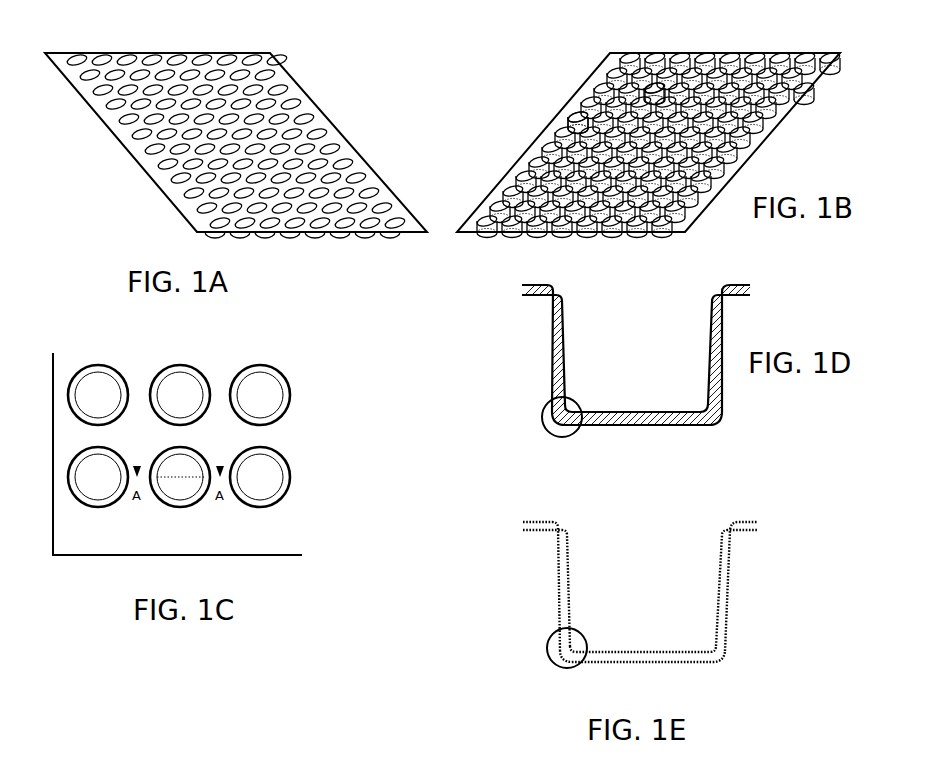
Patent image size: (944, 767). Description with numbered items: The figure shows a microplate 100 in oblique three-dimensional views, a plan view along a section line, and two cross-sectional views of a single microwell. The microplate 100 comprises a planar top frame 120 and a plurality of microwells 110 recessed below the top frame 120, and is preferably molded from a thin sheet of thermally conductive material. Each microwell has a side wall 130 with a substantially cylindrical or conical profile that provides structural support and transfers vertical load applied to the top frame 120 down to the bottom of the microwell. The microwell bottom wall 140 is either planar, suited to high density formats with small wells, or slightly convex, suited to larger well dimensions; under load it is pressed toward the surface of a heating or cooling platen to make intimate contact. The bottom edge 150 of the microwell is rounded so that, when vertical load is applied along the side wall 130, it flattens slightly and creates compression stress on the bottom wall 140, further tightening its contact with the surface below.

In FIG. 1A, the microplate 100 is at (232, 145).
In FIG. 1B, the microplate 100 is at (649, 137).
In FIG. 1A, the microwells 110 is at (99, 93).
In FIG. 1C, the microwells 110 is at (263, 478).
In FIG. 1A, the planar top frame 120 is at (152, 170).
In FIG. 1B, the microwell side wall 130 is at (558, 136).
In FIG. 1D, the microwell side wall 130 is at (551, 362).
In FIG. 1E, the microwell side wall 130 is at (558, 597).
In FIG. 1B, the microwell bottom wall 140 is at (594, 102).
In FIG. 1D, the microwell bottom wall 140 is at (649, 425).
In FIG. 1E, the microwell bottom wall 140 is at (655, 662).
In FIG. 1D, the bottom edge of the microwell 150 is at (553, 421).
In FIG. 1E, the bottom edge of the microwell 150 is at (556, 654).